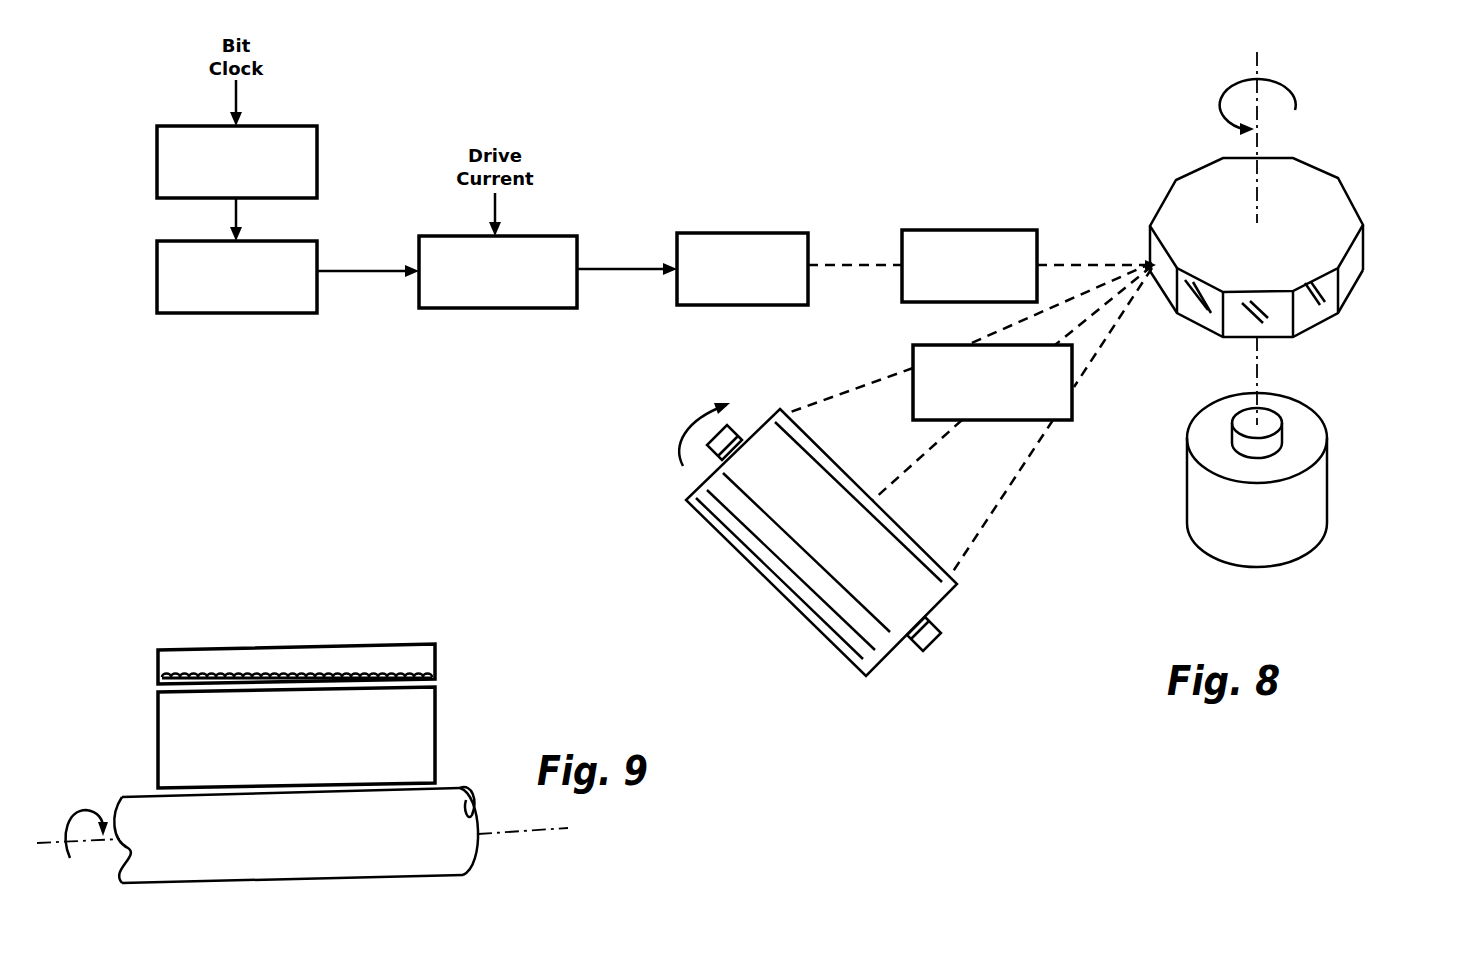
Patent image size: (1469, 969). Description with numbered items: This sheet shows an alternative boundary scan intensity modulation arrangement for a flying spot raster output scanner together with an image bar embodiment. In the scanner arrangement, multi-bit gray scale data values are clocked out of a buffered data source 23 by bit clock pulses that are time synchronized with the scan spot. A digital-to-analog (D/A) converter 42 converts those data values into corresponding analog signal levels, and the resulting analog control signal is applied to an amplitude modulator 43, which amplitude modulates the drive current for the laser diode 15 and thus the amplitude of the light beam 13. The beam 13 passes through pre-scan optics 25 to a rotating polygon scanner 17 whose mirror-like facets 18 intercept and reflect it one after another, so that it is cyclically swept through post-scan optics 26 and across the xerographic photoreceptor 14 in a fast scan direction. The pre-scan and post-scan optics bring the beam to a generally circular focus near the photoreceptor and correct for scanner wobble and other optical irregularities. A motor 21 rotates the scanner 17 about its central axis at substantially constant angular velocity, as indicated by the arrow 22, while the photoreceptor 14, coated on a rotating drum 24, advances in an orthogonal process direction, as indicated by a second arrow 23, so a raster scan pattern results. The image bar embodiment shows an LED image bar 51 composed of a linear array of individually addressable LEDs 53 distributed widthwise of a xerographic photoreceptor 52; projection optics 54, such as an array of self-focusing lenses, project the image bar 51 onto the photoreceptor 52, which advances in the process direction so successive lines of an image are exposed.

In FIG. 8, the buffered data source 23 is at (295, 126).
In FIG. 8, the digital-to-analog (D/A) converter 42 is at (248, 313).
In FIG. 8, the amplitude modulator 43 is at (486, 308).
In FIG. 8, the laser diode 15 is at (746, 233).
In FIG. 8, the pre-scan optics 25 is at (980, 230).
In FIG. 8, the light beam 13 is at (895, 372).
In FIG. 8, the post-scan optics 26 is at (1023, 419).
In FIG. 8, the xerographic photoreceptor 14 is at (763, 565).
In FIG. 8, the rotating drum 24 is at (941, 602).
In FIG. 8, the polygon scanner 17 is at (1310, 189).
In FIG. 8, the facets 18 is at (1322, 308).
In FIG. 8, the arrow 22 is at (1286, 88).
In FIG. 8, the motor 21 is at (1298, 418).
In FIG. 9, the LED image bar 51 is at (410, 640).
In FIG. 9, the individually addressable LEDs 53 is at (182, 677).
In FIG. 9, the projection optics 54 is at (427, 740).
In FIG. 9, the xerographic photoreceptor 52 is at (422, 850).